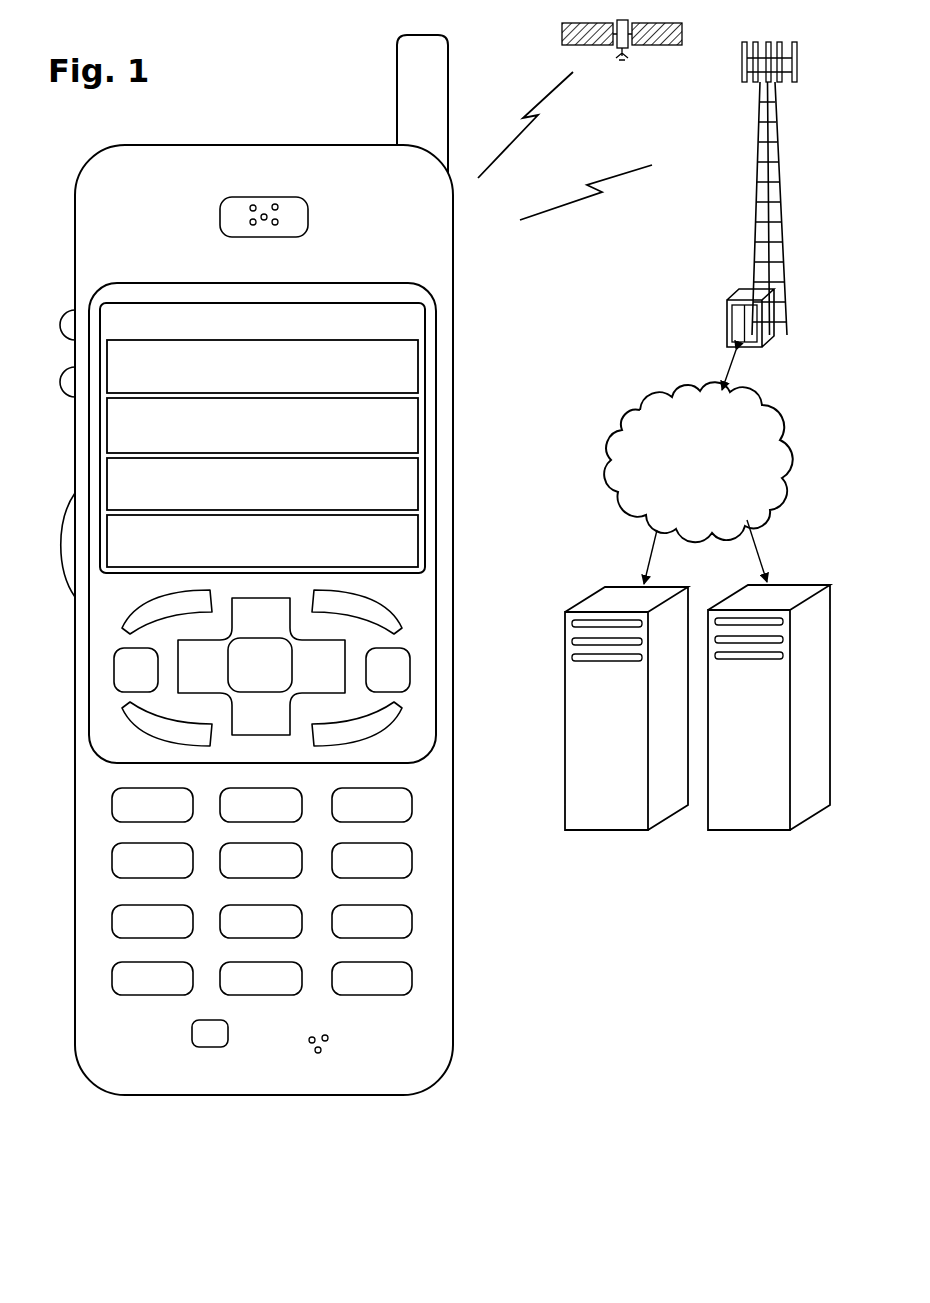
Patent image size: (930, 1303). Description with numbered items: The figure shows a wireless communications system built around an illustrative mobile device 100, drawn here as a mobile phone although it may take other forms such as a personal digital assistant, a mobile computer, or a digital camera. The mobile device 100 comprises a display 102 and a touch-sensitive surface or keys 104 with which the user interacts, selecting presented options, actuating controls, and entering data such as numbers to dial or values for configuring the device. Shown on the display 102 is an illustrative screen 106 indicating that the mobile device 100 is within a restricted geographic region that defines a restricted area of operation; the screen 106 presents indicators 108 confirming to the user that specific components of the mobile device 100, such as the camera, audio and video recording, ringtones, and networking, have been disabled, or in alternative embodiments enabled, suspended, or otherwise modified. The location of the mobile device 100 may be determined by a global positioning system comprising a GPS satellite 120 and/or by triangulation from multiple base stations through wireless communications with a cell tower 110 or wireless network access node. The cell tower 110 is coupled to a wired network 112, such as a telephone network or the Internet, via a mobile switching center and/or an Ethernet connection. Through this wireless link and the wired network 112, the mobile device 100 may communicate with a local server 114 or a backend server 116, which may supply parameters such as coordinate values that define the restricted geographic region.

The mobile device 100 is at (128, 1096).
The display 102 is at (441, 304).
The keys 104 is at (460, 588).
The screen 106 is at (443, 571).
The indicators 108 is at (418, 352).
The cell tower 110 is at (752, 206).
The wired network 112 is at (622, 512).
The local server 114 is at (609, 830).
The backend server 116 is at (737, 830).
The GPS satellite 120 is at (562, 40).